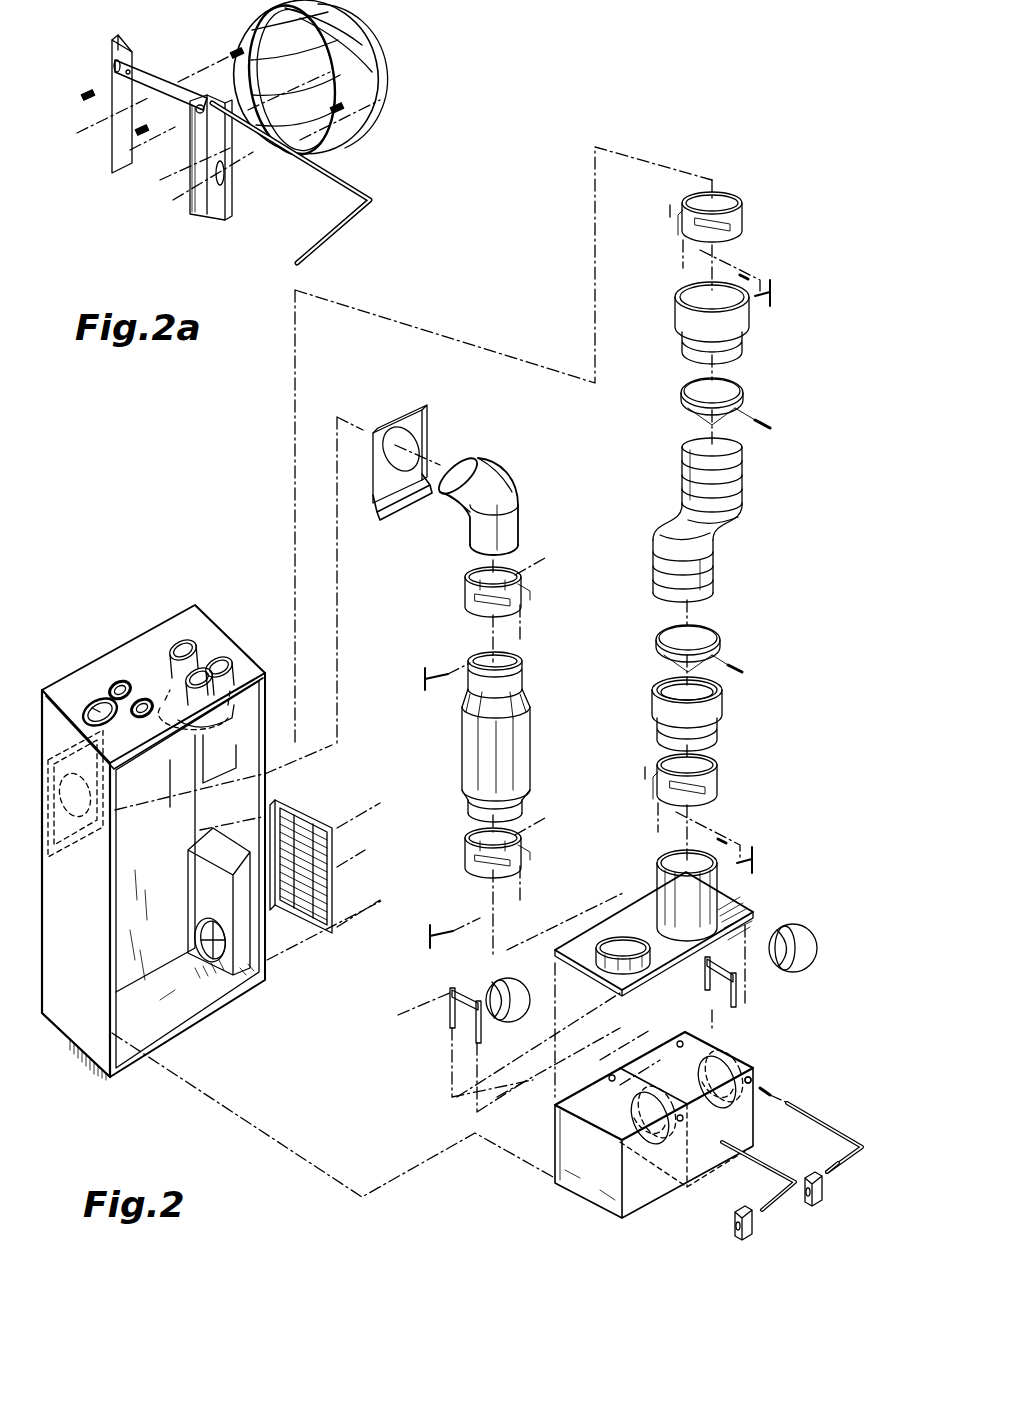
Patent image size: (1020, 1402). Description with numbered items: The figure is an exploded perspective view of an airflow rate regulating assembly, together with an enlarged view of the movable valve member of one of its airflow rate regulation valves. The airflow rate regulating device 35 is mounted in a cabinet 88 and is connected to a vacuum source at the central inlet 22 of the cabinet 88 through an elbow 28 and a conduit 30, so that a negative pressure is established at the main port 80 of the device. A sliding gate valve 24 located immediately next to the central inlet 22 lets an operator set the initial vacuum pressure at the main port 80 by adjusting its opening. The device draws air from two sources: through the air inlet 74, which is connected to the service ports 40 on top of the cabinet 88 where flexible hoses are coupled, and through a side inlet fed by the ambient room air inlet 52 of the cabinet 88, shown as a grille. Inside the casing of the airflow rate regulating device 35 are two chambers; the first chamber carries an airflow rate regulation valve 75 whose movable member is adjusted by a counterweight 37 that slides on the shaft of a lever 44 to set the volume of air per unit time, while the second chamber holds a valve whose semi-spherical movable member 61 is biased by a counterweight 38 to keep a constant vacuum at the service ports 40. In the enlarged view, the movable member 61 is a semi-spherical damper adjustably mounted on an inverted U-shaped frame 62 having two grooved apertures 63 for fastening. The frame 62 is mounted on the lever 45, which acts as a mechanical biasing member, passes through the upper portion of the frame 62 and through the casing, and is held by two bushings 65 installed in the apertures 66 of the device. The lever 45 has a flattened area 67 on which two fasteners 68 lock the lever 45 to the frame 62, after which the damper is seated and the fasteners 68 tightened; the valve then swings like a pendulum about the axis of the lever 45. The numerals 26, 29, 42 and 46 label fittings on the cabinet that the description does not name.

In FIG. 2, the central inlet 22 is at (42, 740).
In FIG. 2, the sliding gate valve 24 is at (420, 420).
In FIG. 2, the control knob 26 is at (120, 682).
In FIG. 2, the elbow 28 is at (495, 475).
In FIG. 2, the plate flange 29 is at (382, 500).
In FIG. 2, the conduit 30 is at (527, 700).
In FIG. 2, the airflow rate regulating device 35 is at (580, 1177).
In FIG. 2, the counterweight 37 is at (735, 1228).
In FIG. 2, the counterweight 38 is at (812, 1175).
In FIG. 2, the service ports 40 is at (215, 648).
In FIG. 2, the gauge 42 is at (100, 700).
In FIG. 2, the lever 44 is at (783, 1198).
In FIG. 2, the lever 45 is at (845, 1165).
In FIG. 2, the knob 46 is at (142, 700).
In FIG. 2, the ambient room air inlet 52 is at (268, 940).
In FIG. 2A, the movable member 61 is at (384, 118).
In FIG. 2, the movable member 61 is at (800, 935).
In FIG. 2, the U-shaped frame 62 is at (736, 1005).
In FIG. 2A, the grooved apertures 63 is at (224, 200).
In FIG. 2, the bushing 65 is at (765, 1090).
In FIG. 2, the apertures 66 is at (752, 1080).
In FIG. 2A, the flattened area 67 is at (298, 160).
In FIG. 2, the flattened area 67 is at (822, 1120).
In FIG. 2A, the fasteners 68 is at (88, 110).
In FIG. 2, the air inlet 74 is at (675, 872).
In FIG. 2, the airflow rate regulation valve 75 is at (500, 975).
In FIG. 2, the main port 80 is at (615, 948).
In FIG. 2, the cabinet 88 is at (44, 1013).